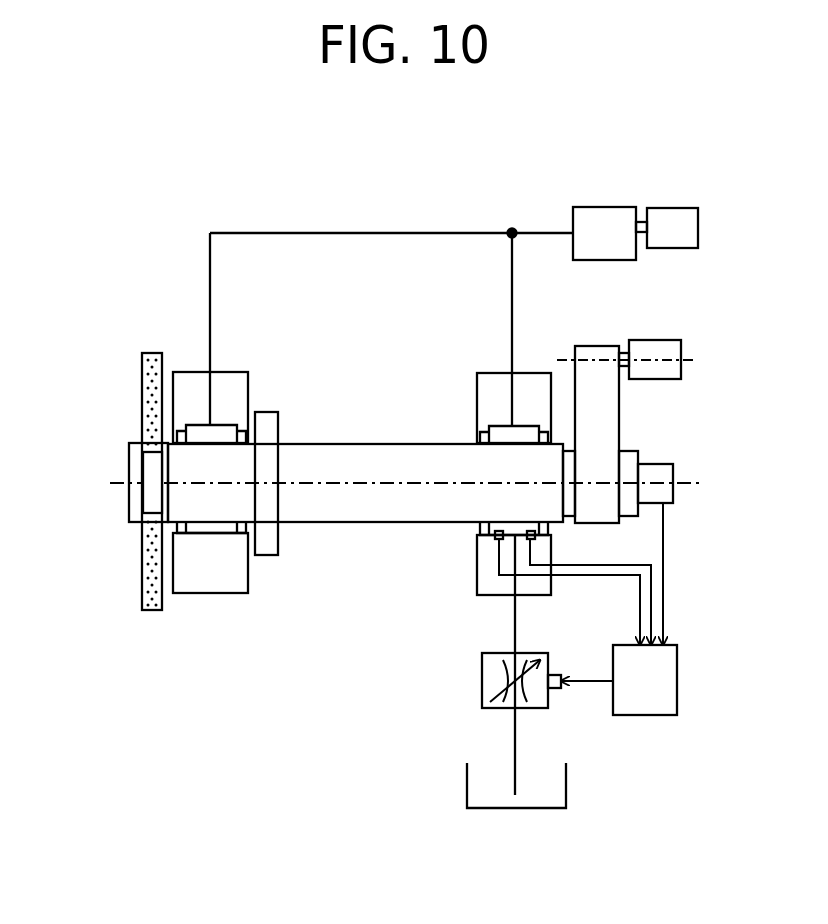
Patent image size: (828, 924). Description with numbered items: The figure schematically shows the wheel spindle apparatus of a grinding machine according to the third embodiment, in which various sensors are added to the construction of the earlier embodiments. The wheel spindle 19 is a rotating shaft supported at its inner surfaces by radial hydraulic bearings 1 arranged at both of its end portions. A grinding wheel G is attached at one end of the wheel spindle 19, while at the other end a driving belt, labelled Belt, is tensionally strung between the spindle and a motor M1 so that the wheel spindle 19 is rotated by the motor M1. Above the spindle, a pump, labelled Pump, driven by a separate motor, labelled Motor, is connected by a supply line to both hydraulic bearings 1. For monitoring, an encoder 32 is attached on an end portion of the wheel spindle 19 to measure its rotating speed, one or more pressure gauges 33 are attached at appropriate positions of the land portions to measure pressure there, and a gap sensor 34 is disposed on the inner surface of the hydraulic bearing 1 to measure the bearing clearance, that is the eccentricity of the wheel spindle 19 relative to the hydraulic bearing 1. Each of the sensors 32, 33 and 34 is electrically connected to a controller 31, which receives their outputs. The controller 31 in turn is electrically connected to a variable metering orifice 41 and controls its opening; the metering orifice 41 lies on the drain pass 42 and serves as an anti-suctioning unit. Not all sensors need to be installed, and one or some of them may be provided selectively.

The hydraulic bearing 1 is at (495, 392).
The wheel spindle 19 is at (383, 465).
The controller 31 is at (648, 680).
The encoder 32 is at (667, 492).
The pressure gauge 33 is at (525, 543).
The gap sensor 34 is at (495, 543).
The variable metering orifice 41 is at (493, 680).
The drain pass 42 is at (516, 736).
The grinding wheel G is at (152, 608).
The pump Pump is at (598, 228).
The motor Motor is at (672, 228).
The motor M1 is at (662, 347).
The driving belt Belt is at (607, 418).